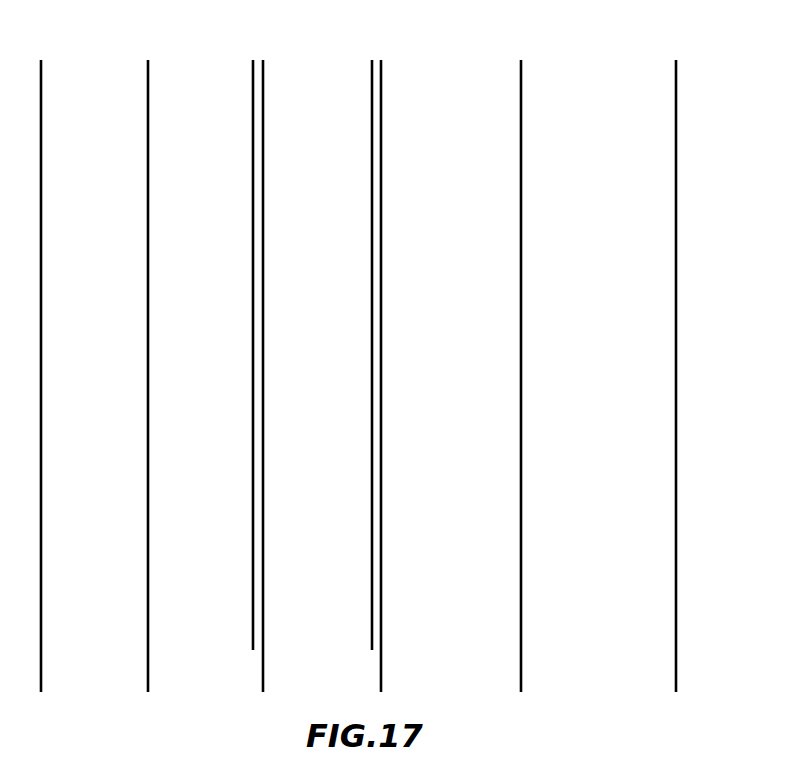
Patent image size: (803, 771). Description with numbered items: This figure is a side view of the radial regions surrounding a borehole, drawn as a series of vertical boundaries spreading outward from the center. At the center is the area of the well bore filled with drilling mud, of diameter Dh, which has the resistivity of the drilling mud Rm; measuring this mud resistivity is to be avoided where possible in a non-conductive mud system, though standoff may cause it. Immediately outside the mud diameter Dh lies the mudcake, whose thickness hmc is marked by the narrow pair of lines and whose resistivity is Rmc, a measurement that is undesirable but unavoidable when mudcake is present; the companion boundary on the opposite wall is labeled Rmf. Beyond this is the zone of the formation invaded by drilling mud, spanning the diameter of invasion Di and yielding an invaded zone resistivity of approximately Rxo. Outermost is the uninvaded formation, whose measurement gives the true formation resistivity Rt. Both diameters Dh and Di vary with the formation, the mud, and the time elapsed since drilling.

The true formation resistivity Rt is at (358, 376).
The invaded zone resistivity Rxo is at (334, 376).
The drilling mud resistivity Rm is at (317, 376).
The mud filtrate resistivity layer Rmf is at (261, 60).
The mudcake resistivity Rmc is at (379, 60).
The diameter of invasion Di is at (383, 201).
The diameter of drilling mud Dh is at (265, 336).
The mudcake thickness hmc is at (370, 599).